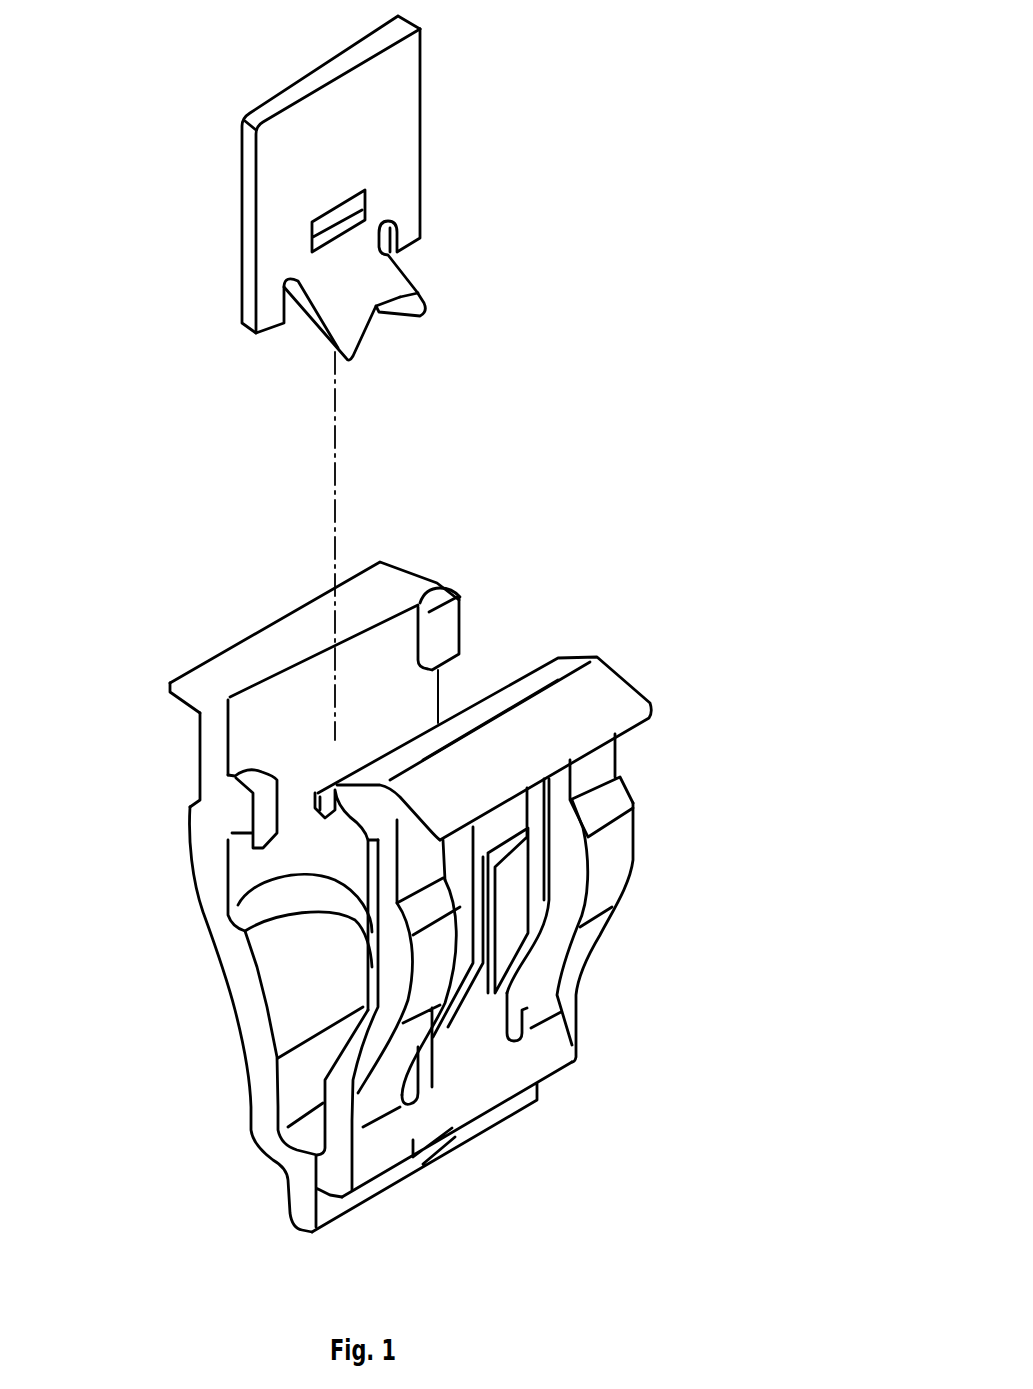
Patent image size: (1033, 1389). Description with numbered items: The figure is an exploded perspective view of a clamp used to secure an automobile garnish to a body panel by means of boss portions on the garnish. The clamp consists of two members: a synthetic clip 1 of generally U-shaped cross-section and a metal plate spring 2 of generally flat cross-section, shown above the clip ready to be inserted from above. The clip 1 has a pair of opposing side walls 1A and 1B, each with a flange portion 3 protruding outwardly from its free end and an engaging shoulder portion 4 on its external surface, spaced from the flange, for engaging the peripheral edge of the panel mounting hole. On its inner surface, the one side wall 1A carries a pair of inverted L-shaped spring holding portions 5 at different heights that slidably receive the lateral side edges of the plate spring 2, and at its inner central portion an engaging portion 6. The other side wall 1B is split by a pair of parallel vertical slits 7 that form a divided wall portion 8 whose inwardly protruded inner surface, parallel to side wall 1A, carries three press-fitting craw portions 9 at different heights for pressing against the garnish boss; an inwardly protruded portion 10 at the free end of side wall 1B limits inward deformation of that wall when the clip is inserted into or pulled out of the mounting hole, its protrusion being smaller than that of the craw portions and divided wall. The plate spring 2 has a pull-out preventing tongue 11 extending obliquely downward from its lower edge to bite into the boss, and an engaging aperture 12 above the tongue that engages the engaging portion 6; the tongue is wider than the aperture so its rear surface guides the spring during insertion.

The clip 1 is at (709, 722).
The one side wall 1A is at (250, 1121).
The other side wall 1B is at (557, 993).
The plate spring 2 is at (397, 378).
The flange portion 3 is at (288, 627).
The engaging shoulder portion 4 is at (192, 807).
The spring holding portion 5 is at (268, 774).
The engaging portion 6 is at (318, 807).
The vertical slit 7 is at (517, 1013).
The divided wall portion 8 is at (317, 870).
The press-fitting craw portion 9 is at (418, 910).
The inwardly protruded portion 10 is at (488, 703).
The pull-out preventing tongue 11 is at (417, 288).
The engaging aperture 12 is at (350, 213).